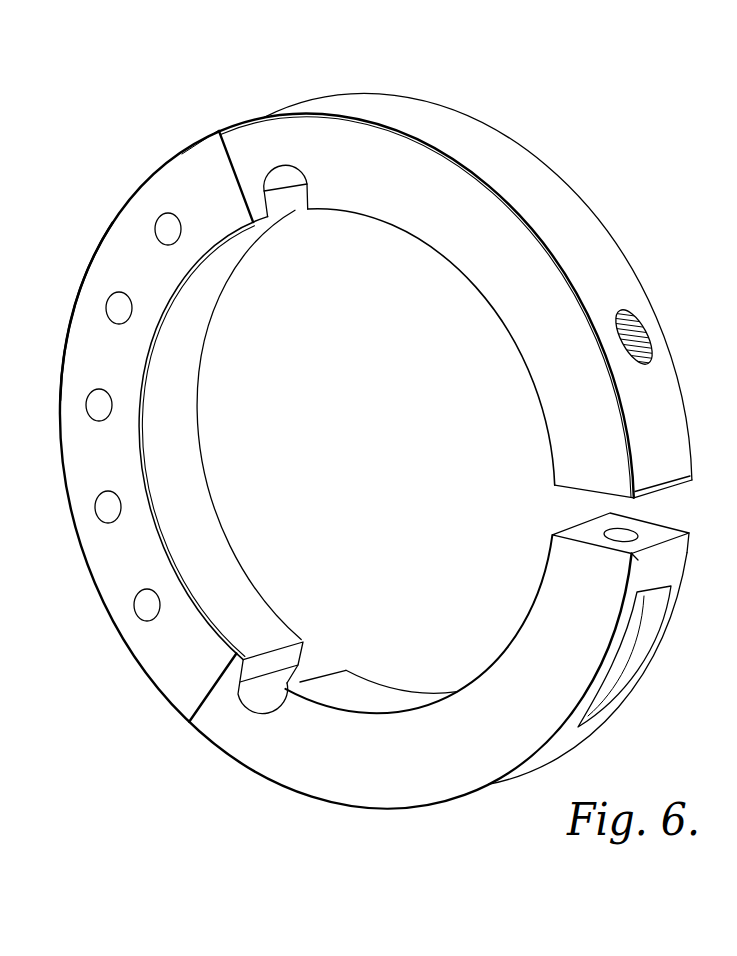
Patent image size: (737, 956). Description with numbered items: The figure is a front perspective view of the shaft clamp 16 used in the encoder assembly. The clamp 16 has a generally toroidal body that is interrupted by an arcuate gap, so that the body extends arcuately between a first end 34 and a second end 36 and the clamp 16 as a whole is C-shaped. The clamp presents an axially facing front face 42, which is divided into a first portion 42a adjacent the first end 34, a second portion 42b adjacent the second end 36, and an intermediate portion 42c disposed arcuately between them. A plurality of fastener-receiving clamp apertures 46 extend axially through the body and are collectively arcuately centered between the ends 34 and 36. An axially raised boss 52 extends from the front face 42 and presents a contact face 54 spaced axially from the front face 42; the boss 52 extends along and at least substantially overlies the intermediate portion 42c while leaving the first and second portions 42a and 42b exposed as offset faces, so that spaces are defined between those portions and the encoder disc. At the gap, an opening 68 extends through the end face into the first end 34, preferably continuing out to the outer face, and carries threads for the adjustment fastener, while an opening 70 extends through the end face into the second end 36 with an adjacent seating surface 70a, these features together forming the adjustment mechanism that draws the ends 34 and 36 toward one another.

The shaft clamp 16 is at (523, 119).
The first end 34 is at (665, 459).
The second end 36 is at (672, 567).
The front face 42 is at (337, 148).
The first portion of front face 42a is at (566, 394).
The second portion of front face 42b is at (558, 610).
The intermediate portion of front face 42c is at (238, 672).
The clamp apertures 46 is at (102, 295).
The boss 52 is at (122, 240).
The contact face 54 is at (186, 184).
The opening 68 is at (636, 315).
The opening 70 is at (608, 529).
The seating surface 70a is at (645, 597).